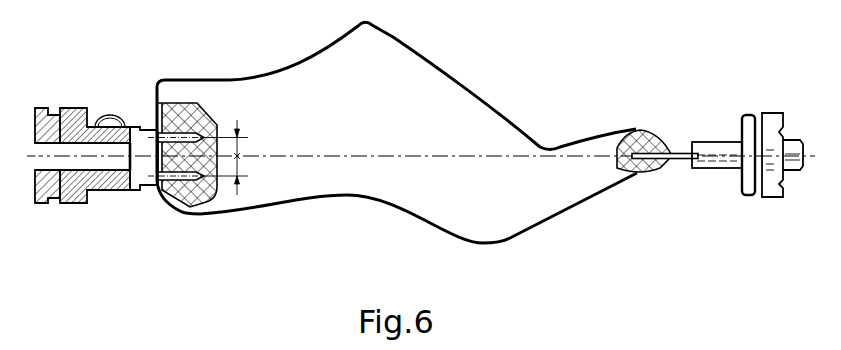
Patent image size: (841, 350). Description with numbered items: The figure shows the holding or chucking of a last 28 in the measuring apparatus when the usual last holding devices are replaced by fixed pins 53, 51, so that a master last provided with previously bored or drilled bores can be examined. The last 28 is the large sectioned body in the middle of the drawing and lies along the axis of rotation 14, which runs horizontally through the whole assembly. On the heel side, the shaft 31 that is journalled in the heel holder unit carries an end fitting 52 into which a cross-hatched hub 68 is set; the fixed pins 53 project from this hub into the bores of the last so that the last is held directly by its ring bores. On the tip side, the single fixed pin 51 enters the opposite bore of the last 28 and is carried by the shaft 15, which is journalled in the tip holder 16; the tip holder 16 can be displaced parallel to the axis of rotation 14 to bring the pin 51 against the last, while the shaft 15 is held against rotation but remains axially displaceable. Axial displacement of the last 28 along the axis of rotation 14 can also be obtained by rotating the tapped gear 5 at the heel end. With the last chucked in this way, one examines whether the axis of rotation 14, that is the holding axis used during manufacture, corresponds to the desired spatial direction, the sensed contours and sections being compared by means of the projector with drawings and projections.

The tapped gear 5 is at (43, 107).
The shaft 31 is at (43, 207).
The connecting body 52 is at (101, 197).
The fixed pin 53 is at (177, 188).
The hub 68 is at (184, 217).
The last 28 is at (382, 108).
The axis of rotation 14 is at (537, 154).
The fixed pin 51 is at (678, 163).
The tip holder 16 is at (773, 106).
The shaft 15 is at (797, 138).